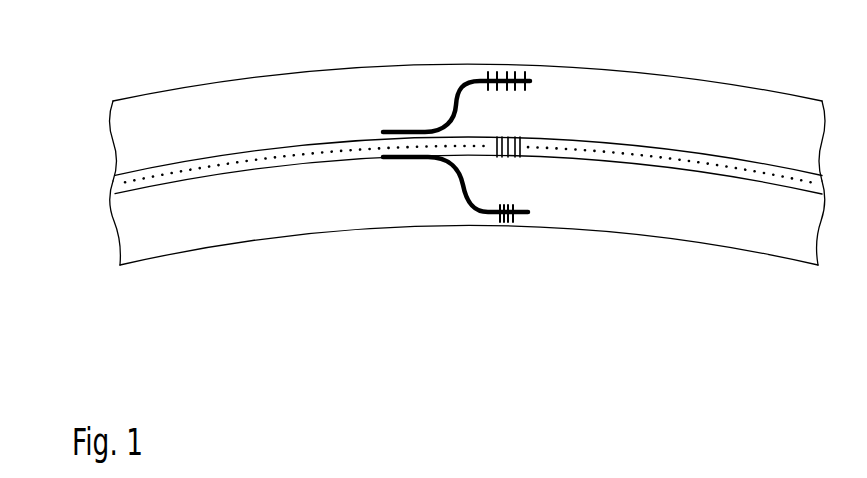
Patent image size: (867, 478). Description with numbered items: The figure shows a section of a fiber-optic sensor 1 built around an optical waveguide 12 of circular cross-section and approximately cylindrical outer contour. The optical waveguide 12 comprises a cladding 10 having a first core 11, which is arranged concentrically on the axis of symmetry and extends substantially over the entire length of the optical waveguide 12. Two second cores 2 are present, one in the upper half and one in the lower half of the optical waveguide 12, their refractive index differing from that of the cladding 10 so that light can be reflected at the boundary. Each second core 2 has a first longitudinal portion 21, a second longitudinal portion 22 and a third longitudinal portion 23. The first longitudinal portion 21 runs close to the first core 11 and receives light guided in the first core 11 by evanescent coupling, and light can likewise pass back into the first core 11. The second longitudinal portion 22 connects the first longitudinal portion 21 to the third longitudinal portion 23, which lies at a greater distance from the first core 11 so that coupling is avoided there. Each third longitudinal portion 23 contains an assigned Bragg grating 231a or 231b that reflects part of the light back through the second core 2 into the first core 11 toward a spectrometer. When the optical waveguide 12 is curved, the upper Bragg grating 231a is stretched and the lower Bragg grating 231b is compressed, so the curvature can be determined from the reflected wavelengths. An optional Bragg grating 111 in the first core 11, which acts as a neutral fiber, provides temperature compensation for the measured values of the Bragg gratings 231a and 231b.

The fiber-optic sensor 1 is at (216, 327).
The second core 2 is at (416, 84).
The cladding 10 is at (635, 217).
The first core 11 is at (785, 167).
The optical waveguide 12 is at (203, 85).
The first longitudinal portion 21 is at (407, 160).
The second longitudinal portion 22 is at (455, 98).
The third longitudinal portion 23 is at (523, 218).
The Bragg grating 111 is at (513, 137).
The Bragg grating 231a is at (510, 70).
The Bragg grating 231b is at (507, 220).